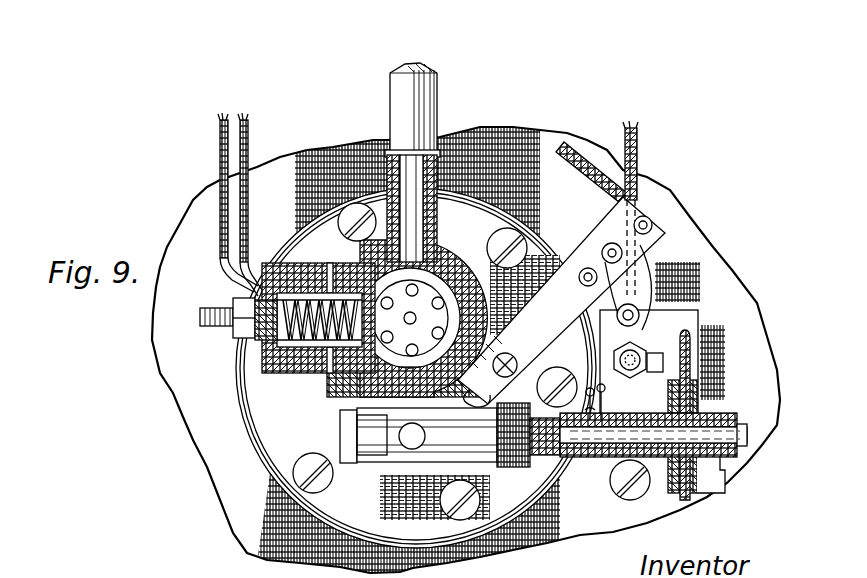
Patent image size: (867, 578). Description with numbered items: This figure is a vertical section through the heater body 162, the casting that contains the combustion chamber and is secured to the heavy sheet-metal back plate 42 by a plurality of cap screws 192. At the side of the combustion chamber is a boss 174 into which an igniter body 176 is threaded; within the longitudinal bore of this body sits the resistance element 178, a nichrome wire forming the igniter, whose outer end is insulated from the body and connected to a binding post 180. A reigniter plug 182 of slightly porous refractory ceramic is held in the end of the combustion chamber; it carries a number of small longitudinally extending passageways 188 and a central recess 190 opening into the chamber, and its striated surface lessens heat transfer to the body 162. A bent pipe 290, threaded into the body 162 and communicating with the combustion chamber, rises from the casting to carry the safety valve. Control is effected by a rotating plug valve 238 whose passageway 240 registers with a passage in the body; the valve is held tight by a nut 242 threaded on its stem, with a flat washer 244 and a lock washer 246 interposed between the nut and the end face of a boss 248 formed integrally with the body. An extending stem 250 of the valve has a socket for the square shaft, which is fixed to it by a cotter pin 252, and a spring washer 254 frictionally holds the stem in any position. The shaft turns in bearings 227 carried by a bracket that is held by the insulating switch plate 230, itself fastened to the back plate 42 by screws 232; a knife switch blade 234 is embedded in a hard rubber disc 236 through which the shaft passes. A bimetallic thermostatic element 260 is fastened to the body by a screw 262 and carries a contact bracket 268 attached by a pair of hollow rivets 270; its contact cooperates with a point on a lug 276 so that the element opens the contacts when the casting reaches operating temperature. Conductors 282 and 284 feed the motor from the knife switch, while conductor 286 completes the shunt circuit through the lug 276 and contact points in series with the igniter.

The back plate 42 is at (210, 447).
The body 162 is at (247, 373).
The boss 174 is at (340, 367).
The igniter body 176 is at (267, 353).
The resistance element 178 is at (290, 296).
The binding post 180 is at (217, 307).
The reigniter plug 182 is at (375, 262).
The passageways 188 is at (458, 247).
The recess 190 is at (355, 366).
The cap screws 192 is at (355, 215).
The bearings 227 is at (727, 485).
The insulating switch plate 230 is at (652, 325).
The screws 232 is at (647, 493).
The knife switch blade 234 is at (675, 322).
The disc 236 is at (707, 370).
The rotating plug valve 238 is at (387, 433).
The passageway 240 is at (390, 420).
The nut 242 is at (537, 462).
The flat washer 244 is at (411, 384).
The lock washer 246 is at (503, 500).
The boss 248 is at (403, 467).
The extending stem 250 is at (545, 457).
The cotter pin 252 is at (594, 393).
The spring washer 254 is at (595, 485).
The bimetallic thermostatic element 260 is at (550, 305).
The screw 262 is at (508, 349).
The contact bracket 268 is at (607, 248).
The hollow rivets 270 is at (610, 253).
The lug 276 is at (655, 305).
The conductor 282 is at (636, 133).
The conductor 284 is at (222, 137).
The conductor 286 is at (247, 160).
The bent pipe 290 is at (397, 87).